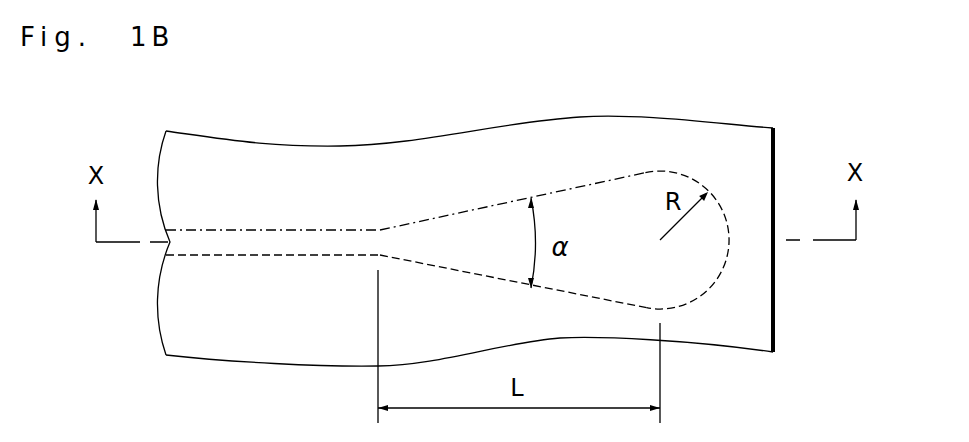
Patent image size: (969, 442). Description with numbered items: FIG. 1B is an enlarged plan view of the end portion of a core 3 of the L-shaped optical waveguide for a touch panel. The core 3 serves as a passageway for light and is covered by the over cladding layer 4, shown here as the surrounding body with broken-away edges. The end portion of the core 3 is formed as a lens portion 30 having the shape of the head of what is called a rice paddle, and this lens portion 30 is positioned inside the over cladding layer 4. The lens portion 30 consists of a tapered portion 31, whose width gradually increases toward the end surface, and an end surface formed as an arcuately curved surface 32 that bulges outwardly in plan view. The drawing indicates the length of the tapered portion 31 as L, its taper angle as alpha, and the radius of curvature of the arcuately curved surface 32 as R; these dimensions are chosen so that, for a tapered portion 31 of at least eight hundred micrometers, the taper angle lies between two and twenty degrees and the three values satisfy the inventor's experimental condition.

The core 3 is at (302, 240).
The over cladding layer 4 is at (212, 148).
The lens portion 30 is at (490, 68).
The tapered portion 31 is at (498, 207).
The arcuately curved surface 32 is at (721, 206).